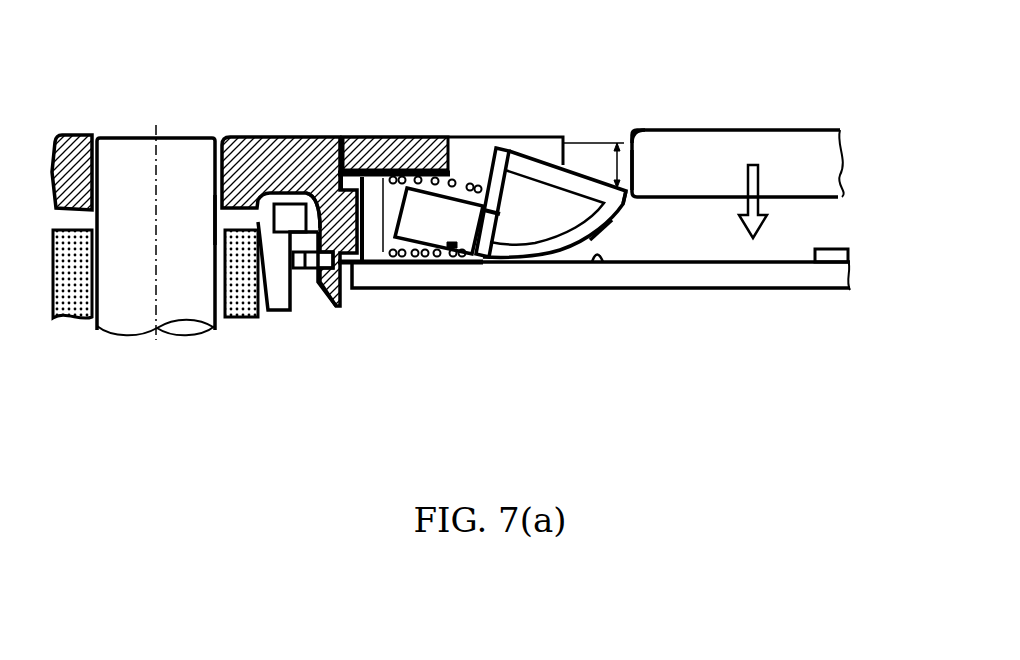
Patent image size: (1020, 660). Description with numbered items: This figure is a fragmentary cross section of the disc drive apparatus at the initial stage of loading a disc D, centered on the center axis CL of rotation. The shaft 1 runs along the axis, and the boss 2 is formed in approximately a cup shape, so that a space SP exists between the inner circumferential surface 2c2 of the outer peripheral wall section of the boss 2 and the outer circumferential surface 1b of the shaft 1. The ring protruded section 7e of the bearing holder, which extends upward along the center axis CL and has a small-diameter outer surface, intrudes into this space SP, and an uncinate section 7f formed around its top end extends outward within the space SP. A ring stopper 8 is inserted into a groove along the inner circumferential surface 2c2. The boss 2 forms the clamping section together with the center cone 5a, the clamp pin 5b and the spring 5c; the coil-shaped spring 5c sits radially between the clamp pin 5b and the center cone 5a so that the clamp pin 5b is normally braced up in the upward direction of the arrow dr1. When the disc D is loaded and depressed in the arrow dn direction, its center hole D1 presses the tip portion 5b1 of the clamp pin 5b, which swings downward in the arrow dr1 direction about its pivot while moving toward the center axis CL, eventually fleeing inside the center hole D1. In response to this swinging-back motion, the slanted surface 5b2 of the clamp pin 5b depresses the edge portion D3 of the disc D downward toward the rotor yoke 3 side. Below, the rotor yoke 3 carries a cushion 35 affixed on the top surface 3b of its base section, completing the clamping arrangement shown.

The shaft 1 is at (127, 160).
The center axis CL is at (155, 218).
The outer circumferential surface 1b is at (217, 220).
The boss 2 is at (250, 137).
The ring protruded section 7e is at (283, 227).
The uncinate section 7f is at (308, 207).
The space SP is at (283, 205).
The ring stopper 8 is at (312, 272).
The center cone 5a is at (397, 137).
The inner circumferential surface 2c2 is at (365, 242).
The spring 5c is at (455, 168).
The clamp pin 5b is at (574, 168).
The tip portion 5b1 is at (625, 203).
The slanted surface 5b2 is at (600, 233).
The rotor yoke 3 is at (480, 277).
The top surface 3b is at (600, 255).
The cushion 35 is at (830, 262).
The disc D is at (822, 147).
The edge portion D3 is at (640, 136).
The center hole D1 is at (632, 165).
The arrow direction dr1 is at (593, 150).
The arrow direction dn is at (770, 201).